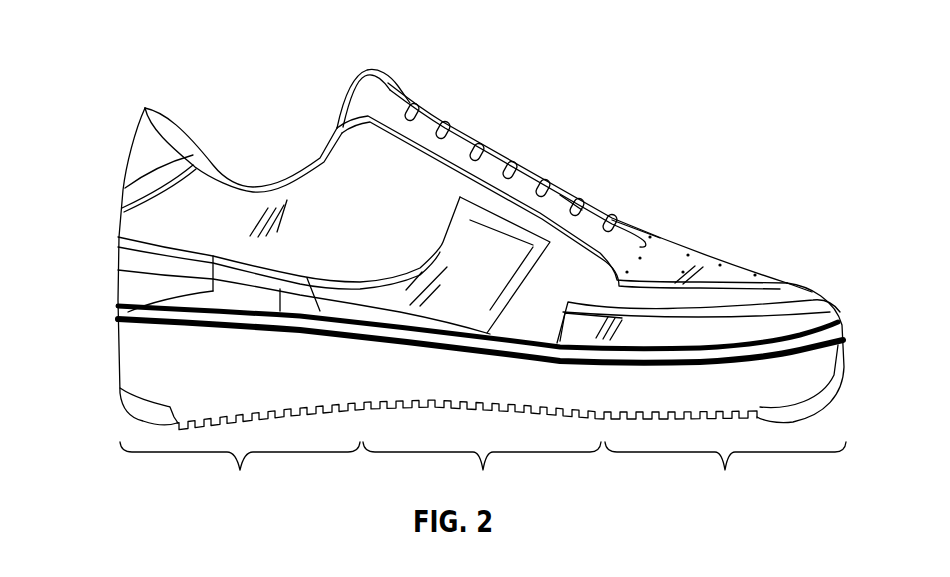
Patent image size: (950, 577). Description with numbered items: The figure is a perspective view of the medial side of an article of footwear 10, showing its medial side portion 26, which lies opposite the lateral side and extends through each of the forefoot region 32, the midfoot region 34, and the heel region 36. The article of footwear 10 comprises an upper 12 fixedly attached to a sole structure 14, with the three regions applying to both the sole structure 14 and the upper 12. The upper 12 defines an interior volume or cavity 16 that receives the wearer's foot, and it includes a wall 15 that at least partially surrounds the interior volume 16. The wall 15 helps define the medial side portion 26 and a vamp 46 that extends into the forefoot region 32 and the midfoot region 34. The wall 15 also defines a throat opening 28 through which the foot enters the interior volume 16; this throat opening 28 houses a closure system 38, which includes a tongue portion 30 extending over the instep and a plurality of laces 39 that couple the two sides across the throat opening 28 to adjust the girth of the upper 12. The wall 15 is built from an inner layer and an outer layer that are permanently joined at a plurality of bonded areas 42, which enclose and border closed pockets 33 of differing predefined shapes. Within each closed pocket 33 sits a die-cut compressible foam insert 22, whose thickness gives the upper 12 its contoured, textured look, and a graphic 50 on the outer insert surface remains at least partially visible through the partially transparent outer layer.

The article of footwear 10 is at (655, 35).
The upper 12 is at (108, 193).
The sole structure 14 is at (380, 387).
The wall 15 is at (643, 228).
The interior volume or cavity 16 is at (255, 172).
The insert 22 is at (487, 283).
The medial side portion 26 is at (850, 363).
The throat opening 28 is at (570, 183).
The tongue portion 30 is at (372, 92).
The forefoot region 32 is at (725, 474).
The closed pocket 33 is at (407, 145).
The midfoot region 34 is at (482, 474).
The heel region 36 is at (240, 474).
The closure system 38 is at (500, 138).
The laces 39 is at (480, 137).
The bonded areas 42 is at (320, 243).
The vamp 46 is at (780, 278).
The graphic 50 is at (118, 247).